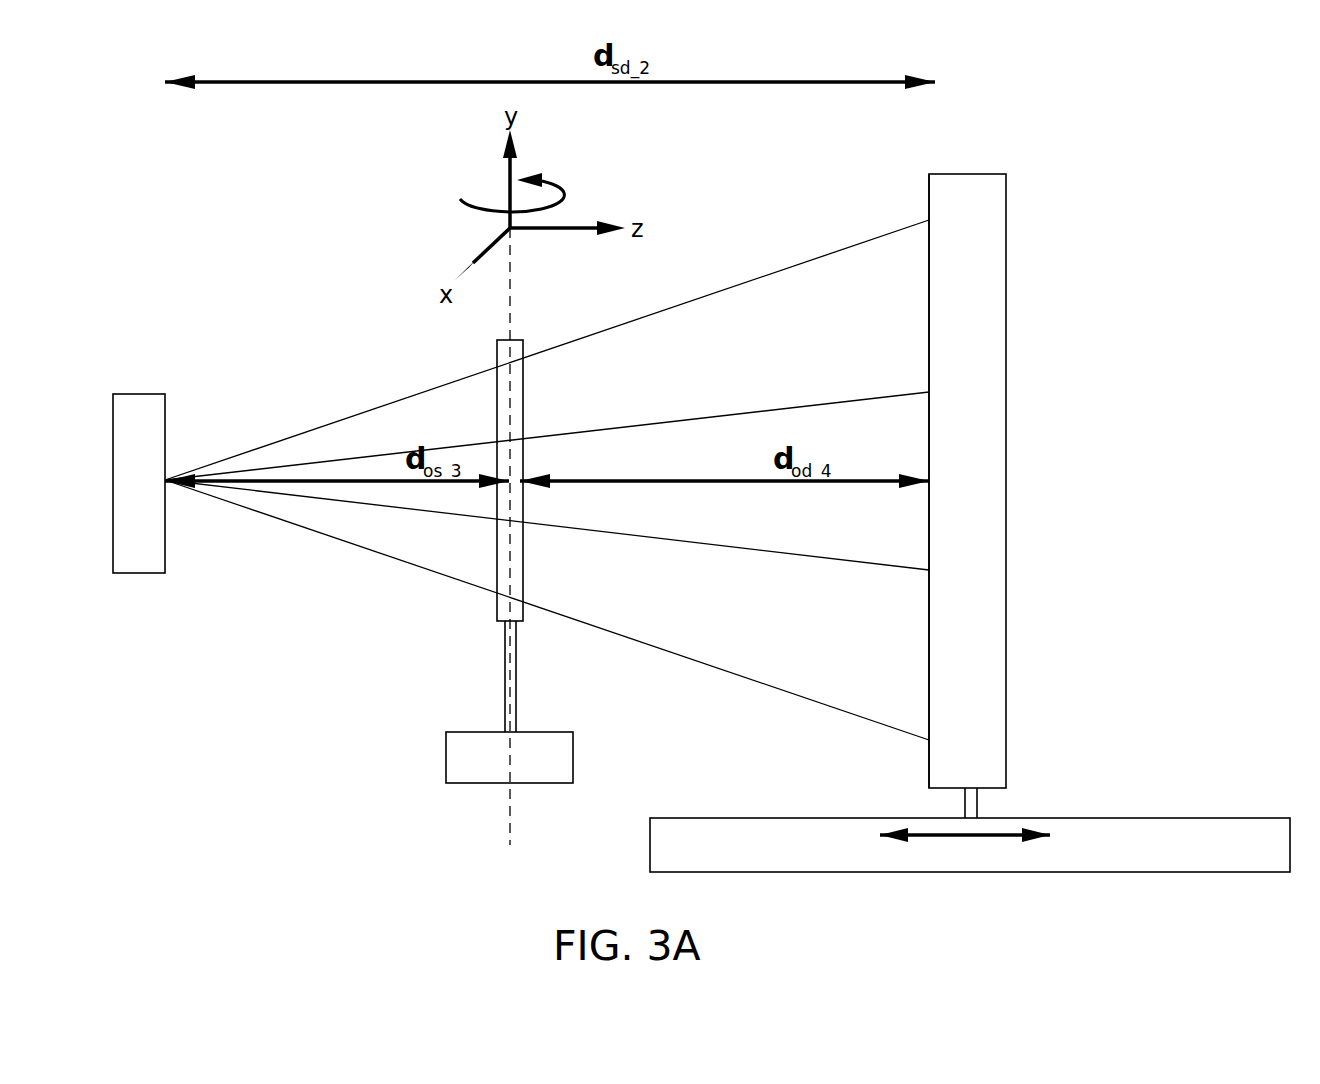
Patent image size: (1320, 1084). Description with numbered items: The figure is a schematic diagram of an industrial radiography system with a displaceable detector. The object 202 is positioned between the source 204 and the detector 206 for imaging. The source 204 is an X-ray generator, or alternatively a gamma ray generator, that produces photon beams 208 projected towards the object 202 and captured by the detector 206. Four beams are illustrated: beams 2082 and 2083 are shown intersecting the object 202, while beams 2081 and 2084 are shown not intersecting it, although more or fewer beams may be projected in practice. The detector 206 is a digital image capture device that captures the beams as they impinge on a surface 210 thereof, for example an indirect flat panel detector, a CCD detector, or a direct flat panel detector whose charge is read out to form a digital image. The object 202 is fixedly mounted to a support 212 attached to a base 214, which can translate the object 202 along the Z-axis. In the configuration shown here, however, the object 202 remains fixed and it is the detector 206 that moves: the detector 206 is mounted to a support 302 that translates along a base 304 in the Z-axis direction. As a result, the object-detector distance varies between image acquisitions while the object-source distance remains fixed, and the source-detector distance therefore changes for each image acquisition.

The object 202 is at (523, 597).
The source 204 is at (138, 573).
The detector 206 is at (985, 174).
The photon beams 208 is at (547, 461).
The photon beam 2081 is at (812, 260).
The photon beam 2082 is at (700, 420).
The photon beam 2083 is at (784, 553).
The photon beam 2084 is at (864, 718).
The surface 210 is at (929, 313).
The support 212 is at (446, 745).
The base 214 is at (505, 697).
The support 302 is at (978, 798).
The base 304 is at (1137, 818).